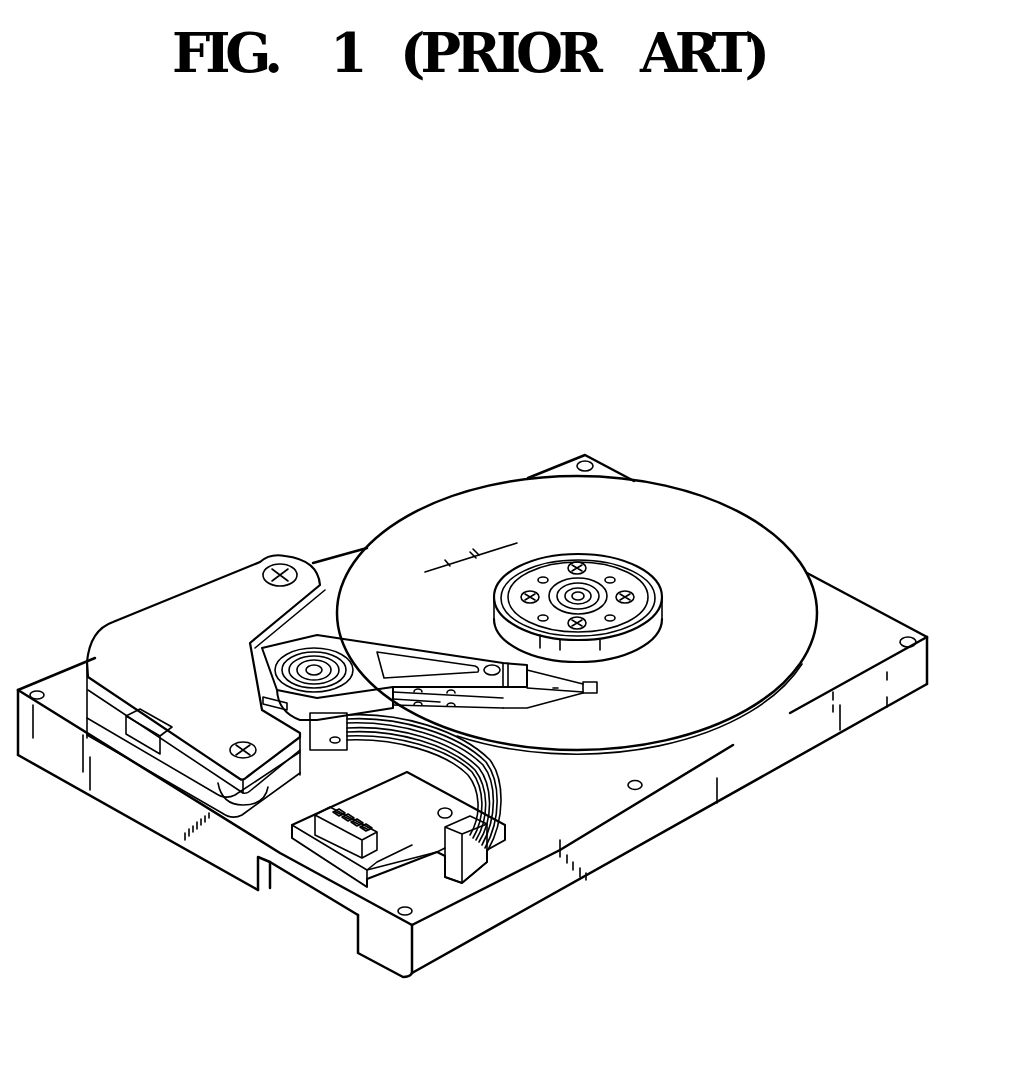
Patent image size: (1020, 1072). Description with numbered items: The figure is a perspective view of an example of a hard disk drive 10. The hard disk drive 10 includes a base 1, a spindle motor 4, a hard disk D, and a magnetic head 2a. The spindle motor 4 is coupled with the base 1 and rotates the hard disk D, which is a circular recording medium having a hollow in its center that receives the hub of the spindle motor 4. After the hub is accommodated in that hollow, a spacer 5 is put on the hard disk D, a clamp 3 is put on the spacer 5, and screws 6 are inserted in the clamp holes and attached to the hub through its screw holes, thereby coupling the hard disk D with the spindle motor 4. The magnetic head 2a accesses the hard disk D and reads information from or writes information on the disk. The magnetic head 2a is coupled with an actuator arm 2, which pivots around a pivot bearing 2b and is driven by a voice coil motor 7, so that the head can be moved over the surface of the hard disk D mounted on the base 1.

The base 1 is at (827, 687).
The actuator arm 2 is at (378, 643).
The magnetic head 2a is at (598, 688).
The pivot bearing 2b is at (293, 657).
The clamp 3 is at (607, 558).
The spindle motor 4 is at (597, 594).
The spacer 5 is at (500, 622).
The screws 6 is at (577, 566).
The voice coil motor 7 is at (187, 770).
The hard disk drive 10 is at (655, 422).
The hard disk D is at (743, 540).